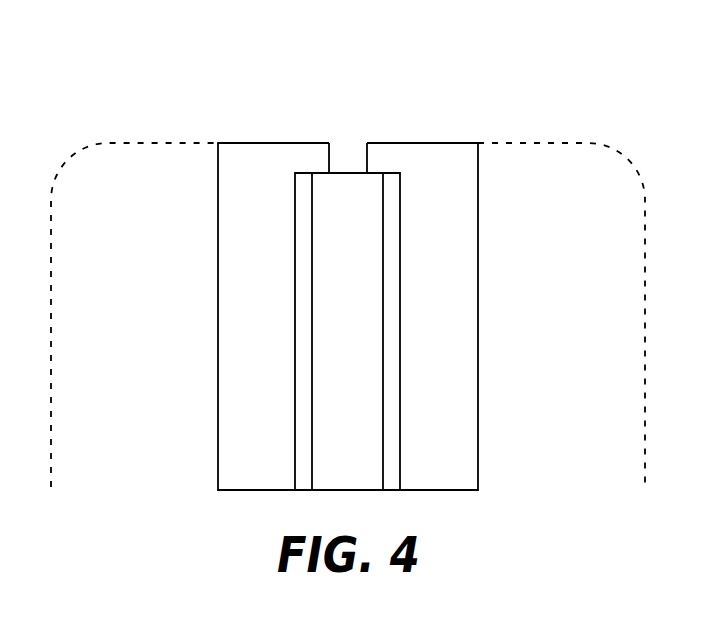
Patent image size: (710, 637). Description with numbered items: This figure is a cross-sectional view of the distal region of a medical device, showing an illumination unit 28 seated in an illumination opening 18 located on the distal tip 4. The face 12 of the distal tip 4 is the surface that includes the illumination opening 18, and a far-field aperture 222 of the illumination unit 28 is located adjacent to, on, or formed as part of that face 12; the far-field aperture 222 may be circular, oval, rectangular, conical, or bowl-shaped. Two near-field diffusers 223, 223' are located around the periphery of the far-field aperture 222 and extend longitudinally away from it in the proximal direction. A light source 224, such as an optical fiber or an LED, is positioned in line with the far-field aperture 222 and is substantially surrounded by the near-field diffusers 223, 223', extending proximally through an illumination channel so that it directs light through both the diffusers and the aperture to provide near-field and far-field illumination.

The distal tip 4 is at (52, 116).
The face 12 is at (535, 88).
The illumination opening 18 is at (250, 110).
The illumination unit 28 is at (349, 77).
The far-field aperture 222 is at (353, 150).
The near-field diffuser 223 is at (279, 331).
The near-field diffuser 223' is at (418, 331).
The light source 224 is at (327, 363).